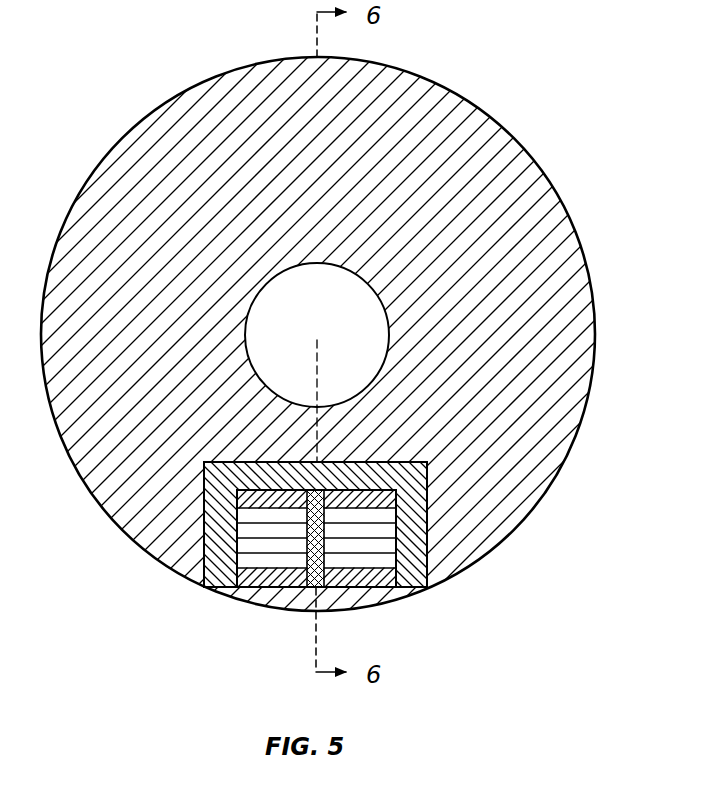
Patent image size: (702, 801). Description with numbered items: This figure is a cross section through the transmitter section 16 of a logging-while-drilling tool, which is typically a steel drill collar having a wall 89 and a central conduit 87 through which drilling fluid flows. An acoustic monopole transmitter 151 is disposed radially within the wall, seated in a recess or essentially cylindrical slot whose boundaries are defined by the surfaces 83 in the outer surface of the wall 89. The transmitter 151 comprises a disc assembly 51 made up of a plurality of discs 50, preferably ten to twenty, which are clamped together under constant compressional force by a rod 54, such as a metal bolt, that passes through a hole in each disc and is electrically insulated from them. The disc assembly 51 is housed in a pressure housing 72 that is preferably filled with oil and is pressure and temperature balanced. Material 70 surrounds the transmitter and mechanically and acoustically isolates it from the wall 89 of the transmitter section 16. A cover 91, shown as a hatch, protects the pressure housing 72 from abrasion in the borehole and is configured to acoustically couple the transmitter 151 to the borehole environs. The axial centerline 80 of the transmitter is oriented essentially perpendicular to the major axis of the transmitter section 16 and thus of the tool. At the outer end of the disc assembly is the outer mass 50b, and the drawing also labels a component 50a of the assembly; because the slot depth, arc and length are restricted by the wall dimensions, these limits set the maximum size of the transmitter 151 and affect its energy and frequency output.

The transmitter section 16 is at (450, 98).
The wall 89 is at (210, 232).
The conduit 87 is at (364, 334).
The axial centerline 80 is at (317, 367).
The material 70 is at (273, 465).
The pressure housing 72 is at (250, 487).
The surfaces 83 is at (205, 485).
The discs 50 is at (237, 535).
The first end of sensor assembly 50a is at (382, 463).
The outer mass 50b is at (382, 582).
The rod 54 is at (288, 570).
The acoustic monopole transmitter 151 is at (404, 497).
The disc assembly 51 is at (375, 530).
The cover 91 is at (325, 603).